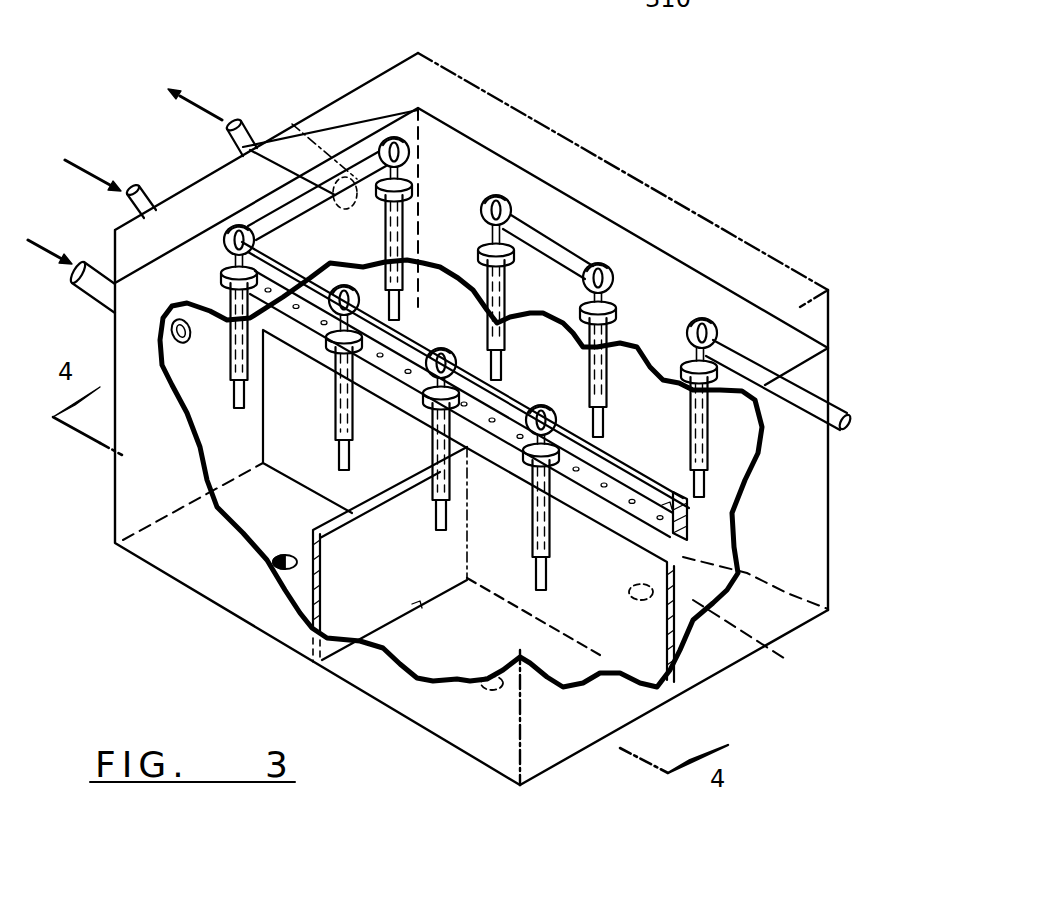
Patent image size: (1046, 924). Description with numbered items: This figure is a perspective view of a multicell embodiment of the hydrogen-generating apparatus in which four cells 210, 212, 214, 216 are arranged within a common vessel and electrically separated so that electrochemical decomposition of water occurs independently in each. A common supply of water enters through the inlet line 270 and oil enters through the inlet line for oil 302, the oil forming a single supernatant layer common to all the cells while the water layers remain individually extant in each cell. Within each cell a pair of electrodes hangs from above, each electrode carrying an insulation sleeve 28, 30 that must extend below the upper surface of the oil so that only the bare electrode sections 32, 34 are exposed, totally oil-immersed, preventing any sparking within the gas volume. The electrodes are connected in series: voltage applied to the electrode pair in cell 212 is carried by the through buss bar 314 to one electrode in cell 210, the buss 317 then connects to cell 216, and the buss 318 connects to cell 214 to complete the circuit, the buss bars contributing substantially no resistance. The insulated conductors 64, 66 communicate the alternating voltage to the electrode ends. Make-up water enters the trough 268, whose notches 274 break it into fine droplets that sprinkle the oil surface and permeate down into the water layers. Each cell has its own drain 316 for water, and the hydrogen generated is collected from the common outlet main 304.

The insulation sleeve 28 is at (231, 369).
The insulation sleeve 30 is at (335, 412).
The bare electrode section 32 is at (497, 200).
The bare electrode section 34 is at (395, 137).
The insulated conductor 64 is at (410, 610).
The insulated conductor 66 is at (810, 400).
The cell 210 is at (429, 482).
The cell 212 is at (533, 651).
The cell 214 is at (768, 500).
The cell 216 is at (454, 312).
The trough 268 is at (805, 582).
The inlet line 270 is at (143, 200).
The notches 274 is at (660, 478).
The inlet line for oil 302 is at (97, 288).
The outlet main 304 is at (250, 128).
The buss bar 314 is at (365, 325).
The drain 316 is at (275, 572).
The buss 317 is at (363, 163).
The buss 318 is at (555, 243).